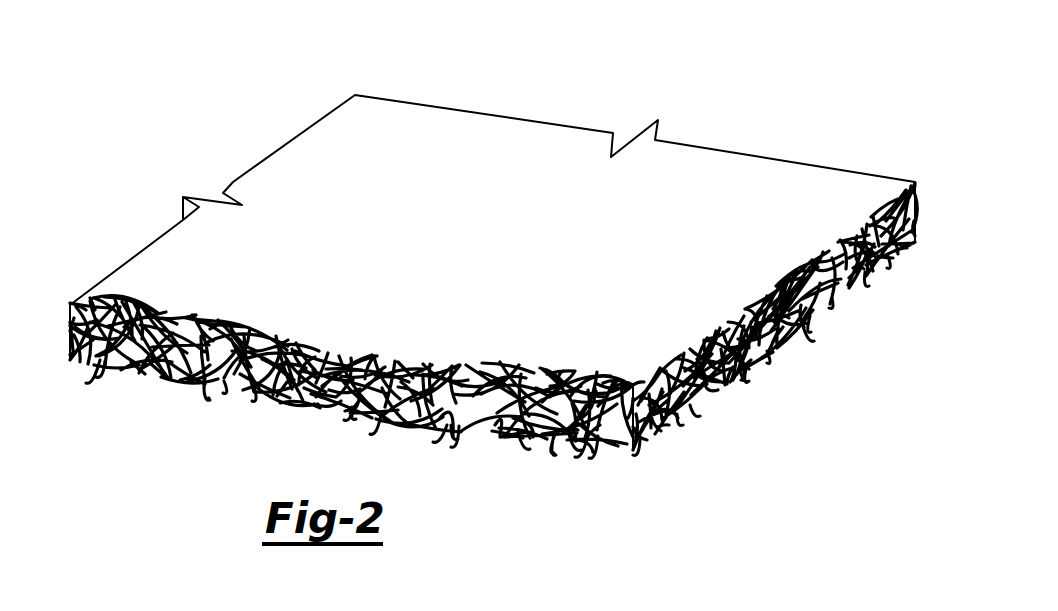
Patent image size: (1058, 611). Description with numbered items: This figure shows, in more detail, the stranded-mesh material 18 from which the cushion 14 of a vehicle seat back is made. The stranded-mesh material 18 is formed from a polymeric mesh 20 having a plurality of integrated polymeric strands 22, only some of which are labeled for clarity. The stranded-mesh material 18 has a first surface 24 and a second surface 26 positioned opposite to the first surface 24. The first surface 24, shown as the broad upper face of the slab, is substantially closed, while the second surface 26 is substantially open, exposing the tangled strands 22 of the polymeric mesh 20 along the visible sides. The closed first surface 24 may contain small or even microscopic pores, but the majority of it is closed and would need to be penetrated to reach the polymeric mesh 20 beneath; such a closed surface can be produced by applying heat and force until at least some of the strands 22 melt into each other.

The cushion 14 is at (289, 86).
The stranded-mesh material 18 is at (135, 258).
The polymeric mesh 20 is at (70, 342).
The polymeric strands 22 is at (593, 452).
The first surface 24 is at (490, 249).
The second surface 26 is at (280, 403).